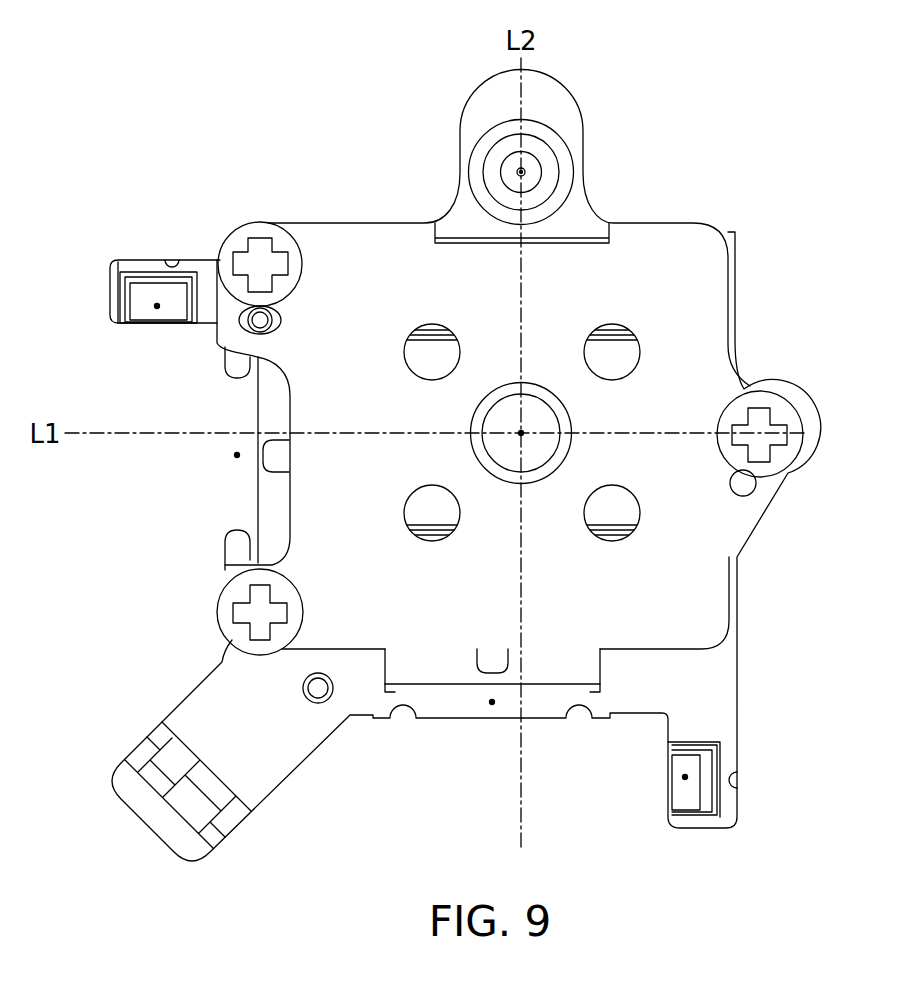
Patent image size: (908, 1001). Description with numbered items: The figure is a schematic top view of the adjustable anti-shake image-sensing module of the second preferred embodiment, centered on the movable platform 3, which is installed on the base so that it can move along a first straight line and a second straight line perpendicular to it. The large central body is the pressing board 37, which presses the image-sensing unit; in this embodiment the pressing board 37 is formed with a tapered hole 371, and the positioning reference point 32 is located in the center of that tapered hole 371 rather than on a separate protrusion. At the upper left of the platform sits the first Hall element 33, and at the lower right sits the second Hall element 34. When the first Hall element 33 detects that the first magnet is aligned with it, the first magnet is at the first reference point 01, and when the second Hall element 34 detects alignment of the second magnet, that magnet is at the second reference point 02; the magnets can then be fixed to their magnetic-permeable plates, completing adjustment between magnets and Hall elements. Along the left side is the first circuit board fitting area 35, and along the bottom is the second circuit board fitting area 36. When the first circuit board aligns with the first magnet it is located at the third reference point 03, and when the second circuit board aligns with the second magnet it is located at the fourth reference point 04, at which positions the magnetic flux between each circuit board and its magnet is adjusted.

The movable platform 3 is at (752, 284).
The pressing board 37 is at (672, 250).
The tapered hole 371 is at (508, 388).
The positioning reference point 32 is at (521, 433).
The first Hall element 33 is at (178, 290).
The first reference point 01 is at (157, 306).
The second Hall element 34 is at (700, 762).
The second reference point 02 is at (685, 777).
The first circuit board fitting area 35 is at (256, 510).
The third reference point 03 is at (237, 455).
The second circuit board fitting area 36 is at (400, 684).
The fourth reference point 04 is at (492, 702).